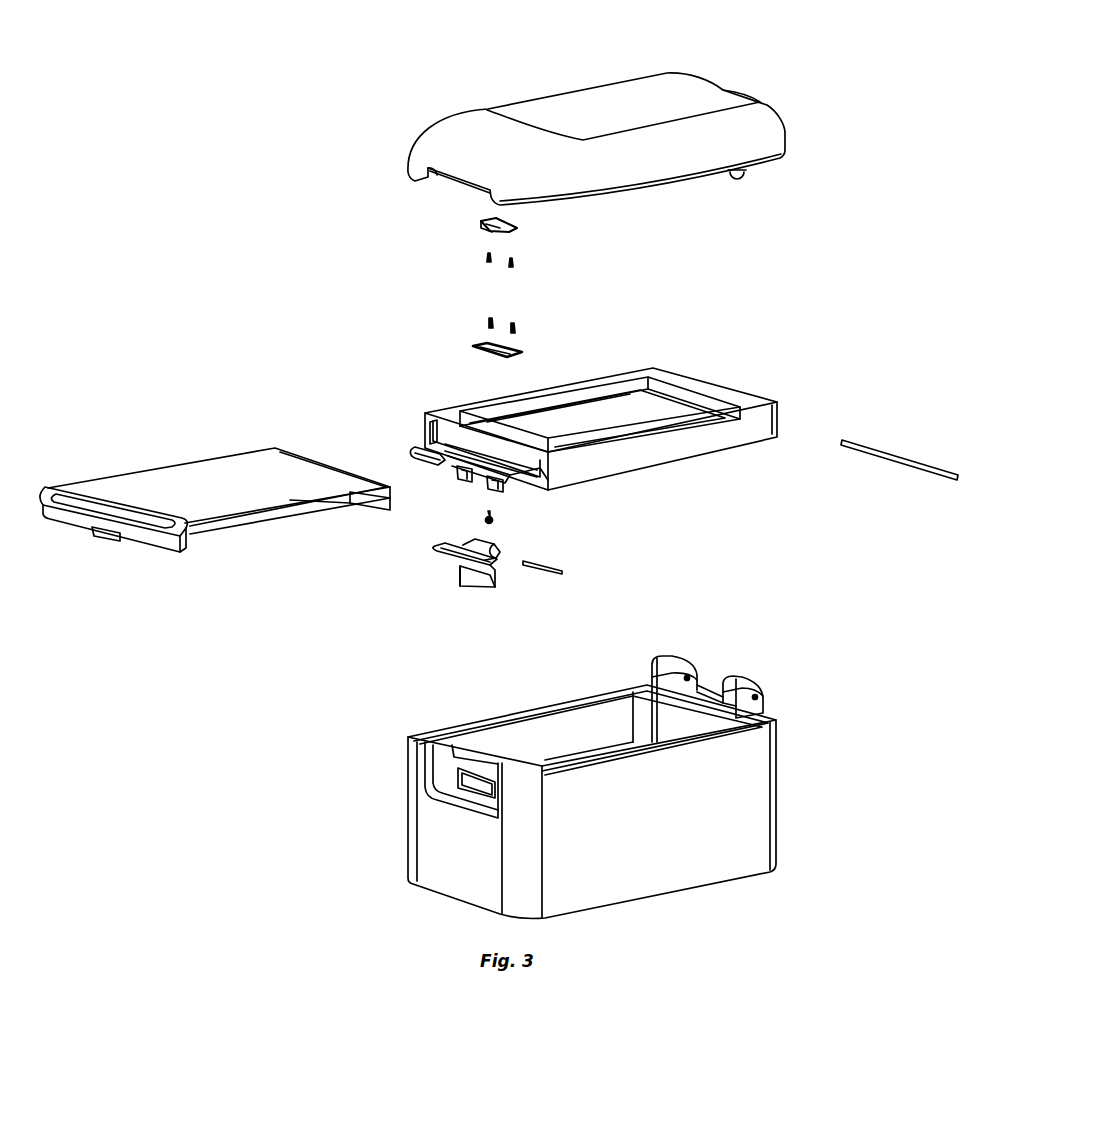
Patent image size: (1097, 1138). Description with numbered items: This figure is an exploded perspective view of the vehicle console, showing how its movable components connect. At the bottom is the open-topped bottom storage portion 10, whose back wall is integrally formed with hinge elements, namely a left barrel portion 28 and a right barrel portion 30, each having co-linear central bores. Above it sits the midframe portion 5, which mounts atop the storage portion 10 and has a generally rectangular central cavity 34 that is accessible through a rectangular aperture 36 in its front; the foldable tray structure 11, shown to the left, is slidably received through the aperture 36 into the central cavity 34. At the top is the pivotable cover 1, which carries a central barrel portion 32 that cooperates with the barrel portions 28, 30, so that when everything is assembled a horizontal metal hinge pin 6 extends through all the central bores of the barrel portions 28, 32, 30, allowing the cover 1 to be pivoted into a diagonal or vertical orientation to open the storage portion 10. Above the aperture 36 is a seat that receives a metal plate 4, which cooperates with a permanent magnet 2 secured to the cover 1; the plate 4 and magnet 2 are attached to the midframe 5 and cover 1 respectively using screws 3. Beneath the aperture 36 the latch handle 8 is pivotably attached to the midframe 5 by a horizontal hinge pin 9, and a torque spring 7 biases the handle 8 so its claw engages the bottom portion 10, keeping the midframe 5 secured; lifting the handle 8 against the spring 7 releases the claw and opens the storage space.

The cover 1 is at (720, 97).
The central barrel portion 32 is at (746, 178).
The permanent magnet 2 is at (522, 227).
The screws 3 is at (520, 262).
The metal plate 4 is at (520, 352).
The midframe portion 5 is at (560, 422).
The central cavity 34 is at (560, 412).
The rectangular aperture 36 is at (432, 432).
The hinge pin 6 is at (862, 445).
The foldable tray structure 11 is at (200, 540).
The torque spring 7 is at (500, 513).
The latch handle 8 is at (500, 553).
The hinge pin 9 is at (535, 568).
The bottom storage portion 10 is at (625, 769).
The right barrel portion 30 is at (680, 658).
The left barrel portion 28 is at (737, 685).